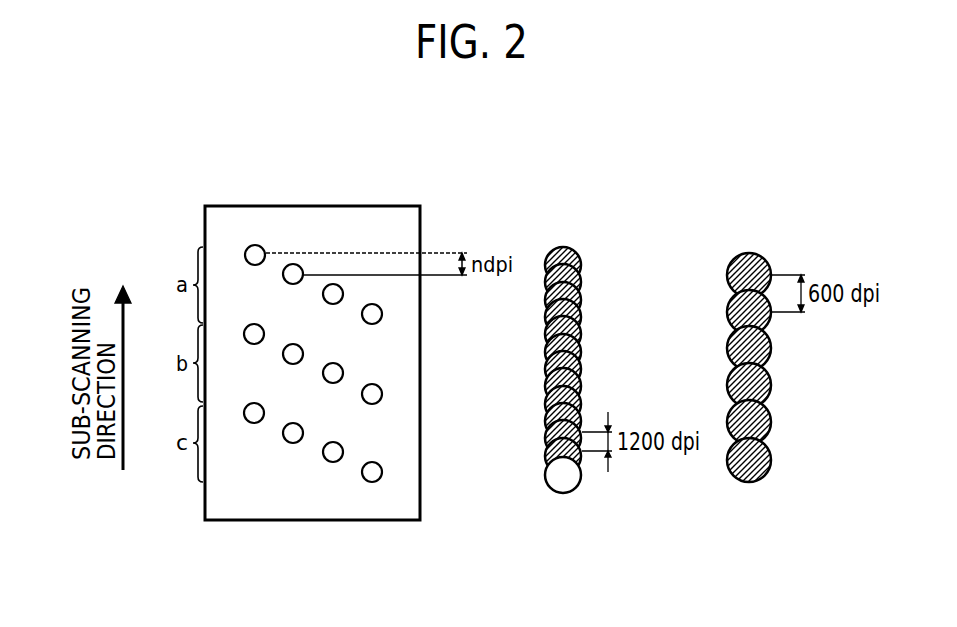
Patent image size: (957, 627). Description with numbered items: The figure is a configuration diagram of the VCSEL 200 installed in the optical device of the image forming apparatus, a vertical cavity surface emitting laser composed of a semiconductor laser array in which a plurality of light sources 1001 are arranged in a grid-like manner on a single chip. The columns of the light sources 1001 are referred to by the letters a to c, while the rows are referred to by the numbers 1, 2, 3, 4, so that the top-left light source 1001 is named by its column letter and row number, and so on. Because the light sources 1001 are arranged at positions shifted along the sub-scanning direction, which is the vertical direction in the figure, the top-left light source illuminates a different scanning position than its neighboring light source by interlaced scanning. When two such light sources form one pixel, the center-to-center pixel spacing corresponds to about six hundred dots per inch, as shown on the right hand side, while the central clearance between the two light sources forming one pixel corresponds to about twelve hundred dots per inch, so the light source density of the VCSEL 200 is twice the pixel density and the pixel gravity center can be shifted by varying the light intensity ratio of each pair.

The VCSEL 200 is at (312, 320).
The light source 1001 is at (457, 200).
The row 1 is at (254, 297).
The row 2 is at (293, 307).
The row 3 is at (333, 316).
The row 4 is at (372, 326).